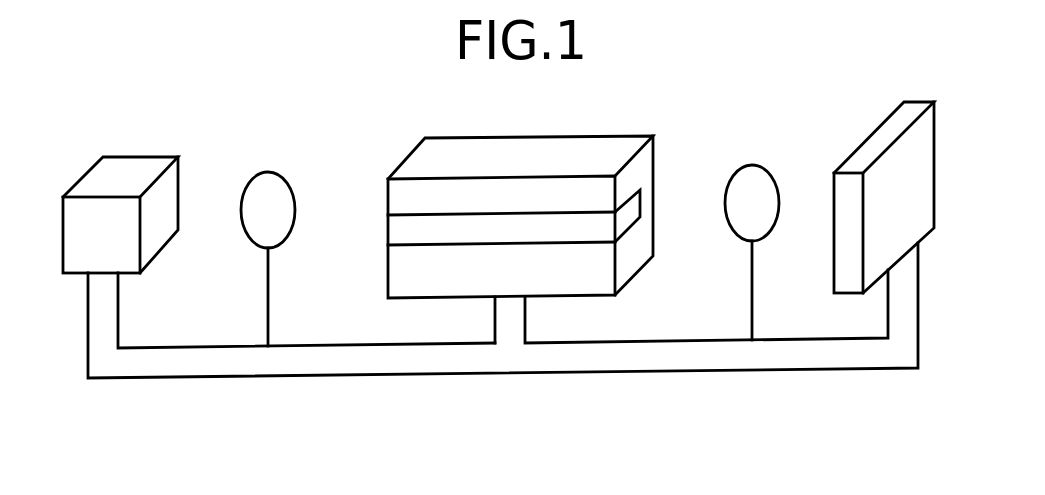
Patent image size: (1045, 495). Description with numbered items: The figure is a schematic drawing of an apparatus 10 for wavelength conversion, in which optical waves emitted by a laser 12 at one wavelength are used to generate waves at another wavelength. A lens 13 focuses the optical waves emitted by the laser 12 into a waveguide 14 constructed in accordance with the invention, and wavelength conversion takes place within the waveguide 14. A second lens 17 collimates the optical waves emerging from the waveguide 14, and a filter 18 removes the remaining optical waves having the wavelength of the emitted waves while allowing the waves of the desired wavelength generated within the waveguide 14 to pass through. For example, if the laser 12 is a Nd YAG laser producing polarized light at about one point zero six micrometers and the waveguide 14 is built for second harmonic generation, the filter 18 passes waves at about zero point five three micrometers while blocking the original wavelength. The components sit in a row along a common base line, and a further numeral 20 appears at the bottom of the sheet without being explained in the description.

The apparatus 10 is at (230, 379).
The laser 12 is at (127, 156).
The lens 13 is at (270, 171).
The waveguide 14 is at (388, 270).
The second lens 17 is at (747, 164).
The filter 18 is at (892, 110).
The system 20 is at (332, 488).